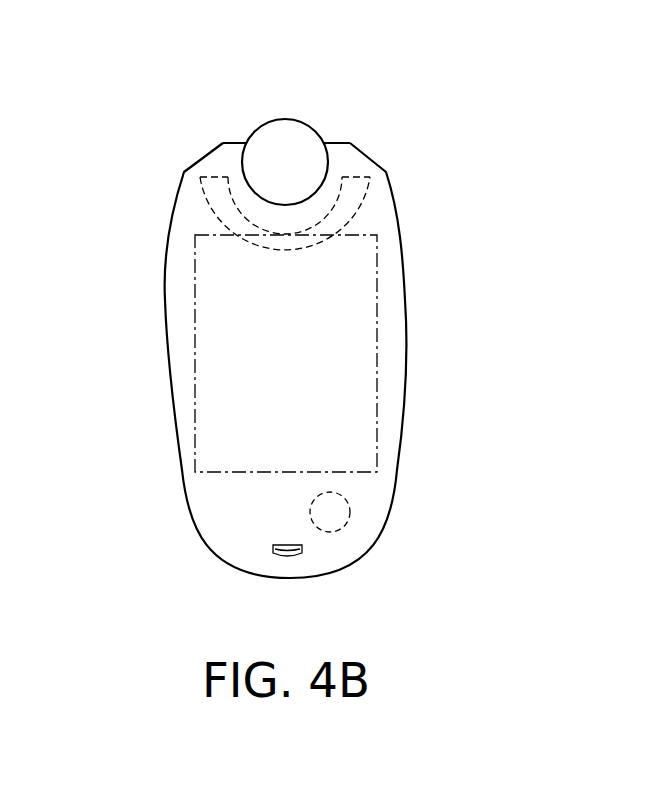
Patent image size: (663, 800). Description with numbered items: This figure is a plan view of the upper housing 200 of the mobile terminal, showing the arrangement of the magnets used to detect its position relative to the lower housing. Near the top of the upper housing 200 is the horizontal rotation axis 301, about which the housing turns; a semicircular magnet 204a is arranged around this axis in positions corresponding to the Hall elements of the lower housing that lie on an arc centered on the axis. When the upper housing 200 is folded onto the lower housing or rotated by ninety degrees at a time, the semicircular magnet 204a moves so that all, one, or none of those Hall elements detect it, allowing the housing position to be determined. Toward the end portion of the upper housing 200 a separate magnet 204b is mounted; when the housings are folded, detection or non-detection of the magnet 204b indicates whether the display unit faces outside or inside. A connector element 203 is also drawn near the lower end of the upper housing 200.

The upper housing 200 is at (148, 428).
The horizontal rotation axis 301 is at (303, 121).
The semicircular magnet 204a is at (362, 203).
The magnet 204b is at (350, 509).
The connector 203 is at (272, 550).